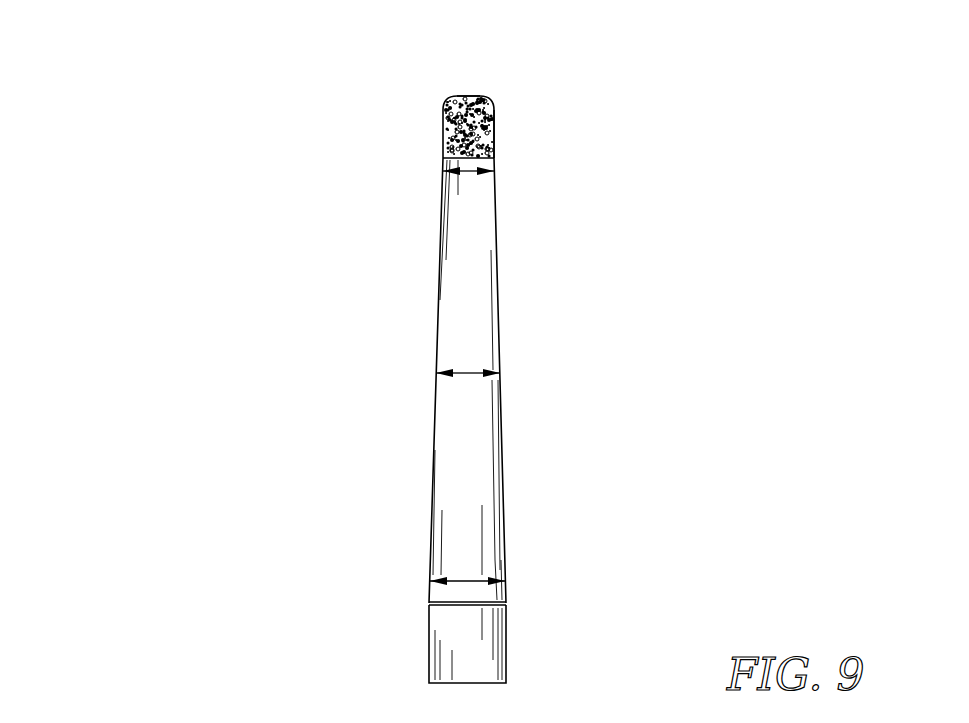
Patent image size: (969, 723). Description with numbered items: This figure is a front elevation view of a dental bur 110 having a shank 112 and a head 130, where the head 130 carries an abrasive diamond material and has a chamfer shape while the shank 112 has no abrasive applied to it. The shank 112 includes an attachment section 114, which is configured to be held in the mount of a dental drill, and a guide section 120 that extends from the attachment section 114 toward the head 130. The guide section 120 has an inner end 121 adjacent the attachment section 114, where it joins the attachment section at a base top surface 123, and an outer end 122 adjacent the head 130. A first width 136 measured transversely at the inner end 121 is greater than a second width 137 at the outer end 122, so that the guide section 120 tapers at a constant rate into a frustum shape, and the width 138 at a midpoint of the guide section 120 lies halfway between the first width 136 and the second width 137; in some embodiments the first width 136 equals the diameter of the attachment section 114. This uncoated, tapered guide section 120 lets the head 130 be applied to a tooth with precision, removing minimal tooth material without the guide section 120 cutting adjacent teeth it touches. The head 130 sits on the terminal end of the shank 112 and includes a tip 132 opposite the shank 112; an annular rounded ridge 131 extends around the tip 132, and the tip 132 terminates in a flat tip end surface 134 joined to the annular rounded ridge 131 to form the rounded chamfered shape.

The dental bur 110 is at (156, 193).
The shank 112 is at (625, 453).
The attachment section 114 is at (510, 665).
The guide section 120 is at (516, 372).
The inner end 121 is at (425, 588).
The outer end 122 is at (437, 165).
The base top surface 123 is at (510, 598).
The head 130 is at (504, 125).
The annular rounded ridge 131 is at (490, 98).
The tip 132 is at (428, 90).
The tip end surface 134 is at (466, 92).
The first width 136 is at (468, 580).
The second width 137 is at (467, 175).
The width at a midpoint 138 is at (468, 376).